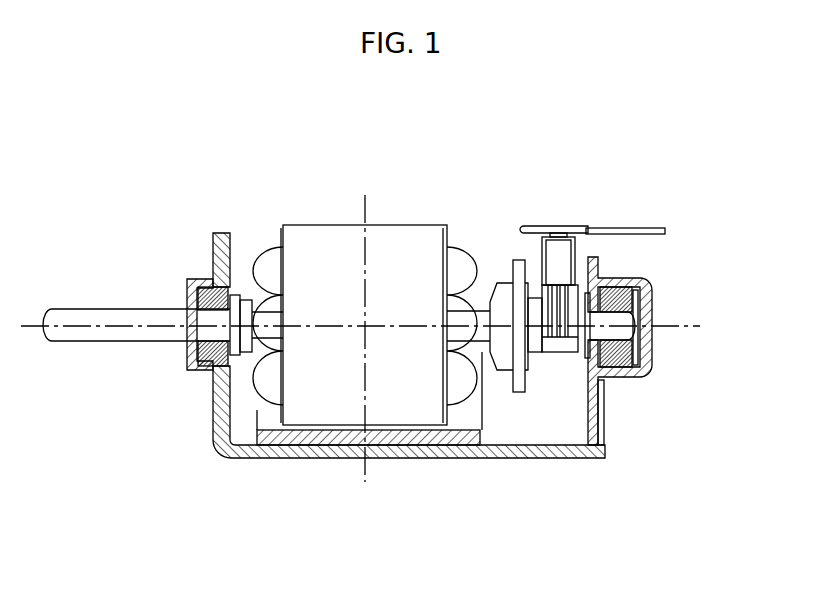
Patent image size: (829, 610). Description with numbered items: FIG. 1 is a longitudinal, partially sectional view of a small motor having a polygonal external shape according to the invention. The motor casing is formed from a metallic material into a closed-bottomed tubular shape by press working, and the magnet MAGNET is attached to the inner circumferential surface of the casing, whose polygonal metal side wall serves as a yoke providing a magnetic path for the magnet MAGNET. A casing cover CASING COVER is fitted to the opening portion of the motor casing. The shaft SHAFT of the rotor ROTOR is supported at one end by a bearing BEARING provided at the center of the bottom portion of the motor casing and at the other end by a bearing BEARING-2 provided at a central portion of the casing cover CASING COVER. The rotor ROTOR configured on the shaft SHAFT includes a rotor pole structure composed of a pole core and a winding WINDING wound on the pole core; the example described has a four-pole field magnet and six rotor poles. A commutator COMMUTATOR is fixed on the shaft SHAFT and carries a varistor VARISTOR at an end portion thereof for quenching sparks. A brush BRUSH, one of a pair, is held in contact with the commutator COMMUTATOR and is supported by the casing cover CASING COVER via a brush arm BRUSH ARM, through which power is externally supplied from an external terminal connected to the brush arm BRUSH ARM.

The shaft SHAFT is at (105, 335).
The bearing BEARING is at (208, 295).
The winding WINDING is at (272, 260).
The rotor ROTOR is at (330, 242).
The varistor VARISTOR is at (518, 265).
The brush arm BRUSH ARM is at (563, 250).
The bearing BEARING-2 is at (637, 275).
The casing cover CASING COVER is at (605, 385).
The commutator COMMUTATOR is at (558, 345).
The brush BRUSH is at (547, 340).
The magnet MAGNET is at (280, 440).